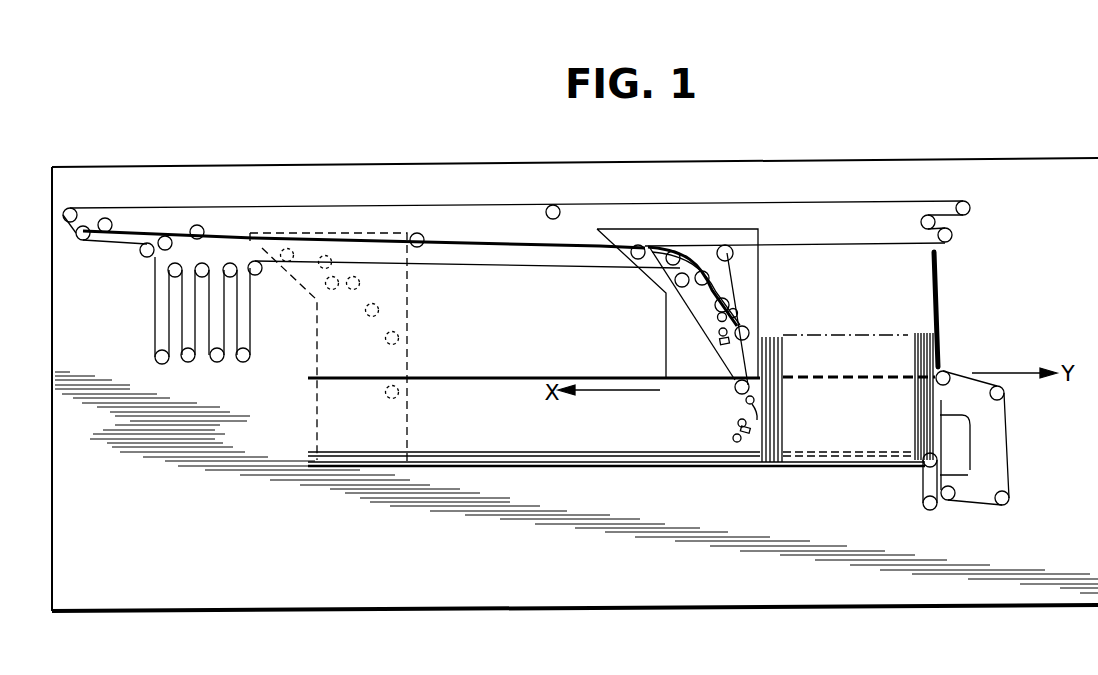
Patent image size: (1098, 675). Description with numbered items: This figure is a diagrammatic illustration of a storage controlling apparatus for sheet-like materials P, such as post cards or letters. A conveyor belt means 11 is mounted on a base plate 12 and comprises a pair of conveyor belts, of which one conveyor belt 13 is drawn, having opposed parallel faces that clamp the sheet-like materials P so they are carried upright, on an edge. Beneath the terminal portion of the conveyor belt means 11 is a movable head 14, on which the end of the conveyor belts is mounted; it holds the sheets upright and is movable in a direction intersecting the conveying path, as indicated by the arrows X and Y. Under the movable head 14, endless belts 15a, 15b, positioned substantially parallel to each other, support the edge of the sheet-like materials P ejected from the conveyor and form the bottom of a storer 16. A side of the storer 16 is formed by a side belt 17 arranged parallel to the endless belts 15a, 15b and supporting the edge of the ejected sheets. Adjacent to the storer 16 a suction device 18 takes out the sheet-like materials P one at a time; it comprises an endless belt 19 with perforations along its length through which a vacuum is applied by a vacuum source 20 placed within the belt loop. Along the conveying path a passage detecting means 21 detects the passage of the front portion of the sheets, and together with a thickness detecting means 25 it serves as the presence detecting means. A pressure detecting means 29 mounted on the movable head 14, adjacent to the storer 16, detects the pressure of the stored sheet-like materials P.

The conveyor belt means 11 is at (715, 287).
The base plate 12 is at (622, 570).
The conveyor belt 13 is at (722, 354).
The movable head 14 is at (702, 432).
The endless belt 15a is at (525, 377).
The endless belt 15b is at (516, 450).
The storer 16 is at (902, 328).
The side belt 17 is at (560, 467).
The suction device 18 is at (1008, 449).
The endless belt 19 is at (942, 507).
The vacuum source 20 is at (953, 465).
The passage detecting means 21 is at (745, 317).
The thickness detecting means 25 is at (722, 331).
The pressure detecting means 29 is at (750, 443).
The sheet-like materials P is at (855, 437).